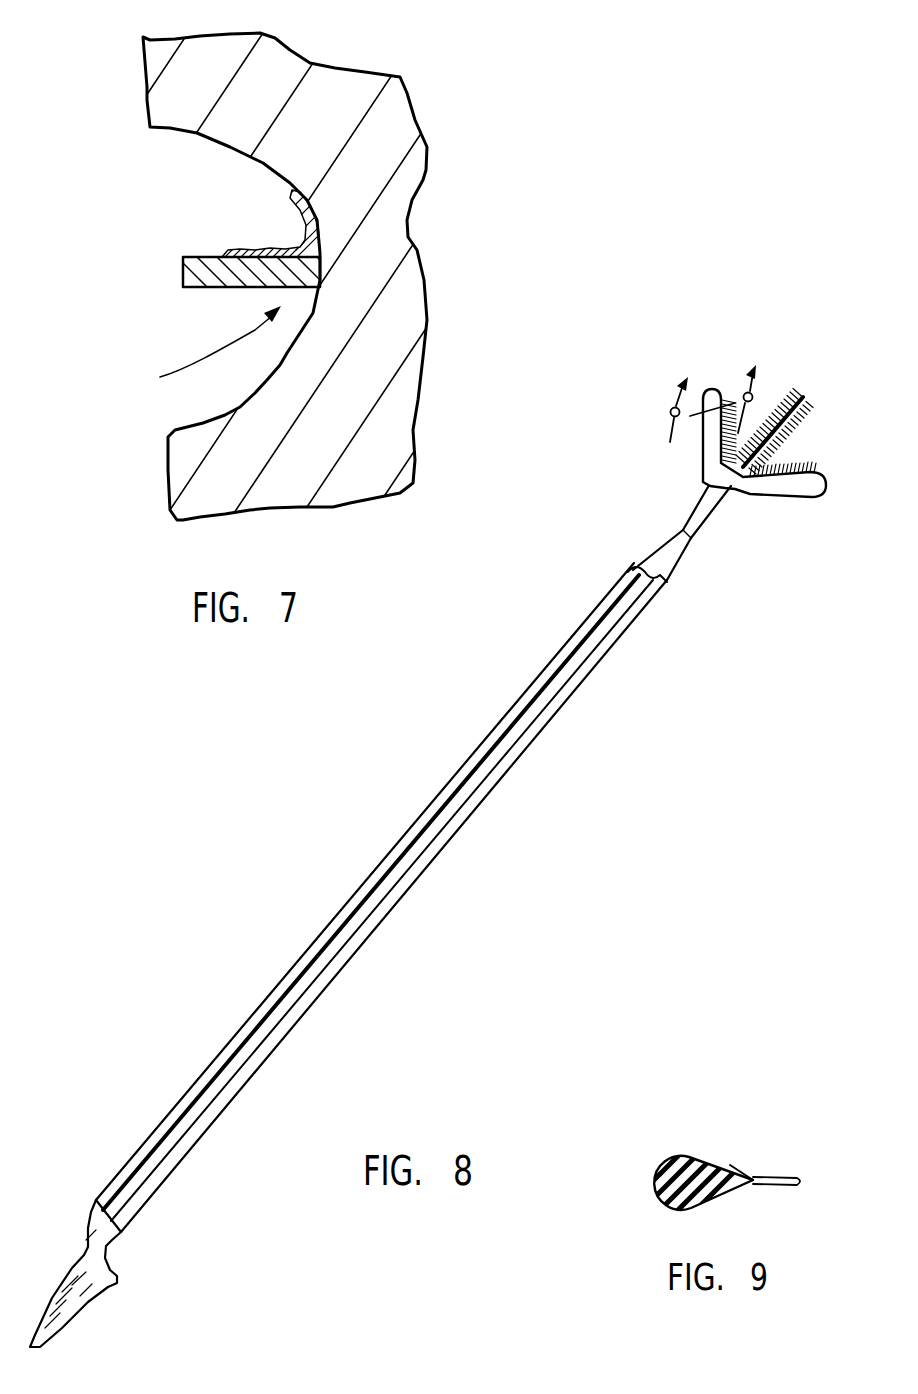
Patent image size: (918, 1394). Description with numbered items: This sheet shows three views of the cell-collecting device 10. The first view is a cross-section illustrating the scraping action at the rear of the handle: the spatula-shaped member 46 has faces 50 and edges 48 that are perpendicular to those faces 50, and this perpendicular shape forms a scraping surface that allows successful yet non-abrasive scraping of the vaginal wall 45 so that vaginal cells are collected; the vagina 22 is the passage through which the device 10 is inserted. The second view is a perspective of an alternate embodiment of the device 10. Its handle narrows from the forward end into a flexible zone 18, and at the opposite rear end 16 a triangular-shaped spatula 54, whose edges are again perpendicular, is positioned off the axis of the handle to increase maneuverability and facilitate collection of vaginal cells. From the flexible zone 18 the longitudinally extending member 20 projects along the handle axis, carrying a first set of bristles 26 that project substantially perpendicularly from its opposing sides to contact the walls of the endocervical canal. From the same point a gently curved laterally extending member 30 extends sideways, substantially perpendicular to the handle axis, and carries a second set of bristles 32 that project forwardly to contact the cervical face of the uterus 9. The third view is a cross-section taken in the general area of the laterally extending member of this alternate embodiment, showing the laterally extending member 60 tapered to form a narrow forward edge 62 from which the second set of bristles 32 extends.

In FIG. 8, the device 10 is at (445, 837).
In FIG. 8, the rear end 16 is at (120, 1192).
In FIG. 8, the flexible zone 18 is at (722, 520).
In FIG. 8, the longitudinally extending member 20 is at (790, 399).
In FIG. 7, the vagina 22 is at (357, 300).
In FIG. 8, the first set of bristles 26 is at (783, 400).
In FIG. 8, the laterally extending member 30 is at (780, 494).
In FIG. 8, the second set of bristles 32 is at (798, 470).
In FIG. 9, the second set of bristles 32 is at (777, 1173).
In FIG. 7, the vaginal wall 45 is at (363, 393).
In FIG. 7, the spatula-shaped member 46 is at (202, 350).
In FIG. 7, the edges 48 is at (287, 250).
In FIG. 7, the faces 50 is at (197, 253).
In FIG. 8, the triangular-shaped spatula 54 is at (83, 1288).
In FIG. 9, the laterally extending member 60 is at (690, 1150).
In FIG. 9, the narrow forward edge 62 is at (740, 1168).
In FIG. 8, the uterus 9 is at (709, 409).